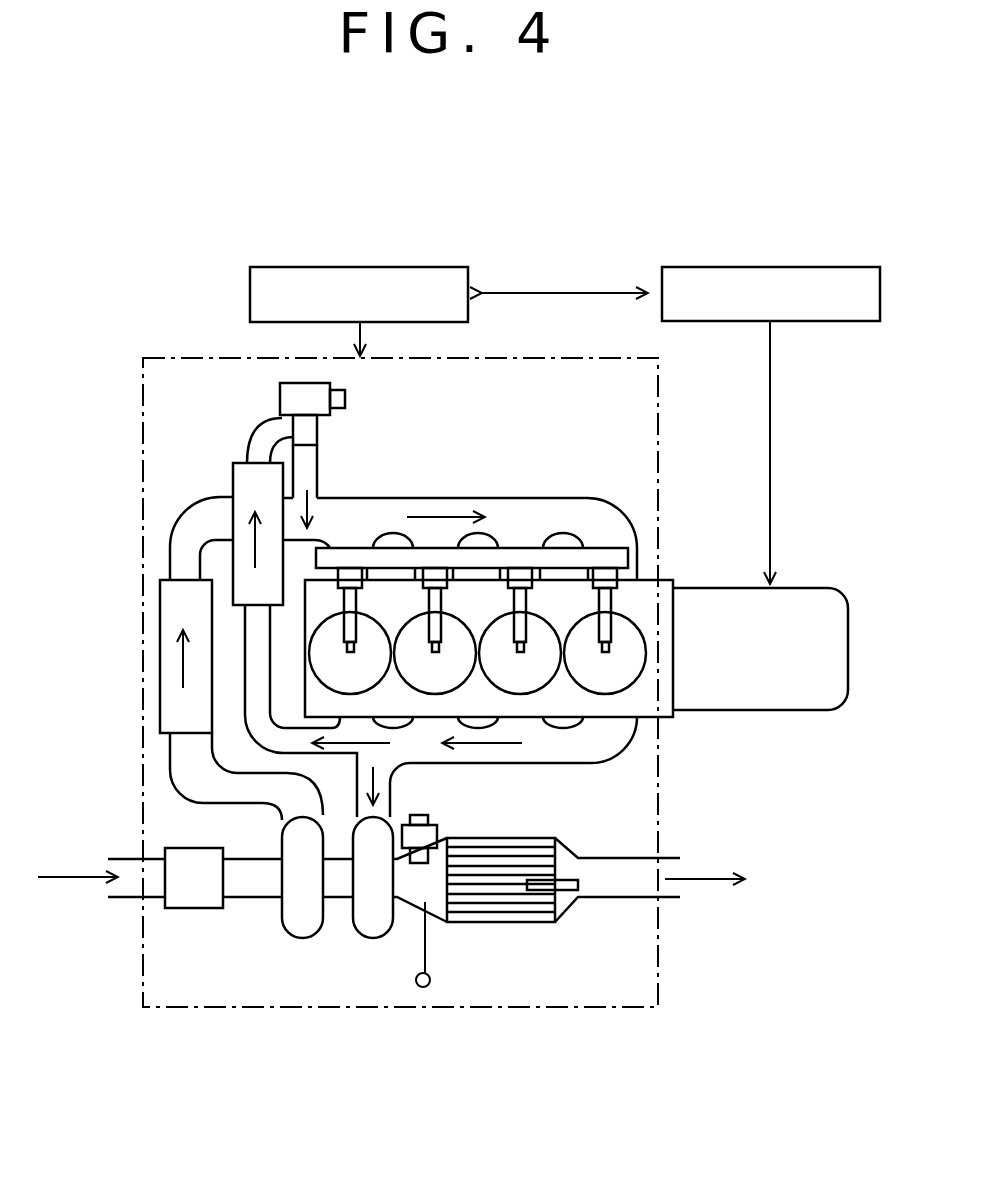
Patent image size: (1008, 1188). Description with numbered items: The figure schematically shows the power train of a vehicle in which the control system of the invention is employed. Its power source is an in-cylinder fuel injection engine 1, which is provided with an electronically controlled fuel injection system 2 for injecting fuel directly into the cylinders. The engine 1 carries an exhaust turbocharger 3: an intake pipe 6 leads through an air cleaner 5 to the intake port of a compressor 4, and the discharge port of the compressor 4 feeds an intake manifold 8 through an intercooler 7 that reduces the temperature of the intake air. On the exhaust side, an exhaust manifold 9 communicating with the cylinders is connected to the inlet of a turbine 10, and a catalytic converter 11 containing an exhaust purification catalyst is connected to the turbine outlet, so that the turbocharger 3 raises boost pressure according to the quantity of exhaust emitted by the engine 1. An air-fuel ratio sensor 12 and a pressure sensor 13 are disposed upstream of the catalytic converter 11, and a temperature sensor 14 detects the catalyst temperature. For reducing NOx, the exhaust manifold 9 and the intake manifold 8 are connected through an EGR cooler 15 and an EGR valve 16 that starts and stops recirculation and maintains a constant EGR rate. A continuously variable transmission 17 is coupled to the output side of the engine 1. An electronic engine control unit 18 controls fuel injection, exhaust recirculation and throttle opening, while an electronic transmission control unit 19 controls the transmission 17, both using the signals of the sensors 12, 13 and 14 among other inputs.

The in-cylinder fuel injection engine 1 is at (563, 475).
The electronically controlled fuel injection system 2 is at (590, 558).
The exhaust turbocharger 3 is at (268, 934).
The compressor 4 is at (303, 920).
The air cleaner 5 is at (203, 897).
The intake pipe 6 is at (238, 858).
The intercooler 7 is at (205, 702).
The intake manifold 8 is at (465, 497).
The exhaust manifold 9 is at (585, 763).
The turbine 10 is at (372, 925).
The catalytic converter 11 is at (537, 929).
The air-fuel ratio sensor 12 is at (437, 838).
The pressure sensor 13 is at (430, 980).
The temperature sensor 14 is at (578, 885).
The EGR cooler 15 is at (245, 480).
The EGR valve 16 is at (315, 400).
The continuously variable transmission 17 is at (800, 587).
The electronic engine control unit 18 is at (412, 267).
The electronic transmission control unit 19 is at (823, 267).